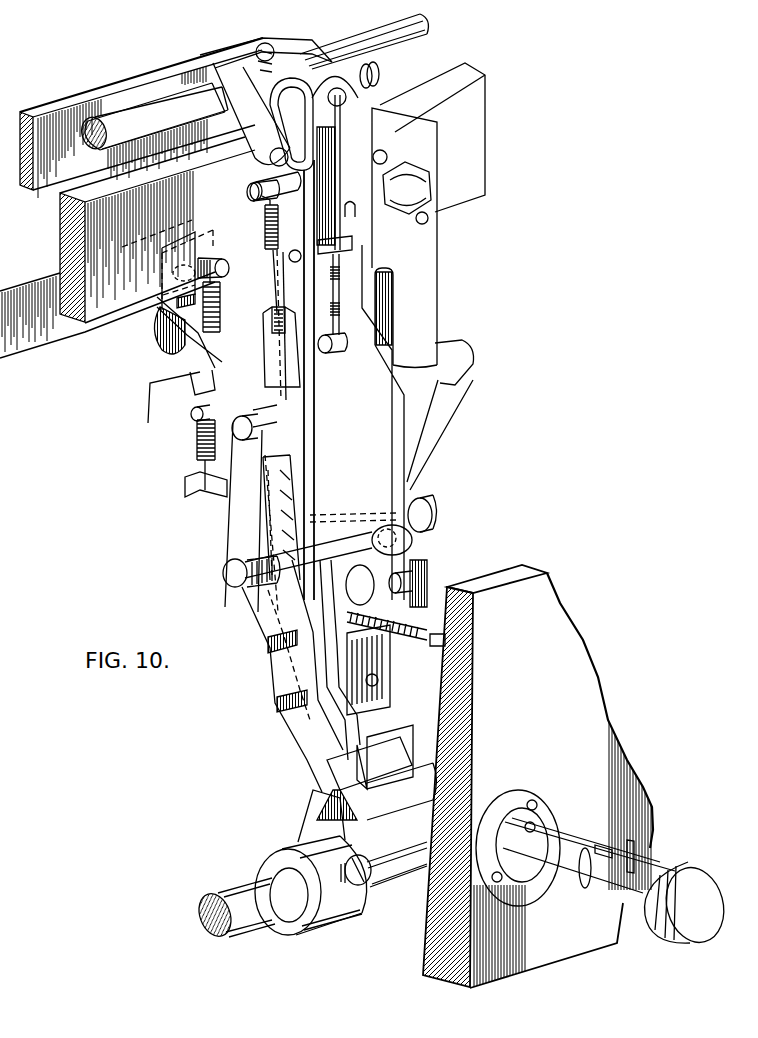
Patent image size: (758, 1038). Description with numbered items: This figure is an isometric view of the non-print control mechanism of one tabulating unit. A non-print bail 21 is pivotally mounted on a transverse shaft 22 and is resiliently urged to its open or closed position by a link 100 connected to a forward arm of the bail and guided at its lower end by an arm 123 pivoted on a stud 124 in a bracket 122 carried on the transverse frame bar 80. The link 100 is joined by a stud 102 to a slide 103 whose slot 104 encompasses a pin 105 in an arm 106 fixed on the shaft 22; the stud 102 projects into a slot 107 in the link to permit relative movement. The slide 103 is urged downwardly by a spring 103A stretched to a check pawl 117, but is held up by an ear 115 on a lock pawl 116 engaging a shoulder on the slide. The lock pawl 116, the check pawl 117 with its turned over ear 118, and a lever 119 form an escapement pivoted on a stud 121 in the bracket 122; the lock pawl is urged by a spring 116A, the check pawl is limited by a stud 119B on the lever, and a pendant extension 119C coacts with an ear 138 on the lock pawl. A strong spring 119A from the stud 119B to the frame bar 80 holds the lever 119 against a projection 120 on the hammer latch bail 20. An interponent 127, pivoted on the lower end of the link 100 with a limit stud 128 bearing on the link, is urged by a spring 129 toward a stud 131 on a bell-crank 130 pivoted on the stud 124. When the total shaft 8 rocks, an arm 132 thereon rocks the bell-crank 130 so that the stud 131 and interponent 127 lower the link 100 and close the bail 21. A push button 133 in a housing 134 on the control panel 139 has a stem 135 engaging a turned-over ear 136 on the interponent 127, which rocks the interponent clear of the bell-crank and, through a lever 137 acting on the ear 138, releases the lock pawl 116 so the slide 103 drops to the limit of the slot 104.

The total shaft 8 is at (238, 900).
The hammer latch bail 20 is at (67, 332).
The non-print bail 21 is at (58, 110).
The transverse shaft 22 is at (350, 48).
The transverse frame bar 80 is at (477, 113).
The link 100 is at (380, 350).
The stud 102 is at (350, 238).
The slide 103 is at (292, 233).
The spring 103A is at (268, 223).
The slot 104 is at (282, 103).
The pin 105 is at (280, 157).
The arm 106 is at (227, 90).
The slot 107 is at (351, 220).
The ear 115 is at (278, 312).
The lock pawl 116 is at (265, 343).
The spring 116A is at (198, 457).
The check pawl 117 is at (237, 522).
The turned over ear 118 is at (240, 552).
The lever 119 is at (192, 392).
The spring 119A is at (168, 312).
The stud 119B is at (191, 420).
The pendant extension 119C is at (265, 525).
The projection 120 is at (173, 352).
The stud 121 is at (202, 443).
The bracket 122 is at (427, 235).
The arm 123 is at (370, 538).
The stud 124 is at (233, 578).
The interponent 127 is at (415, 572).
The limit stud 128 is at (403, 580).
The spring 129 is at (445, 600).
The bell-crank 130 is at (318, 645).
The stud 131 is at (433, 523).
The arm 132 is at (315, 822).
The push button 133 is at (677, 852).
The housing 134 is at (593, 840).
The stem 135 is at (410, 813).
The turned-over ear 136 is at (398, 753).
The lever 137 is at (320, 767).
The turned over ear 138 is at (268, 493).
The control panel 139 is at (605, 748).